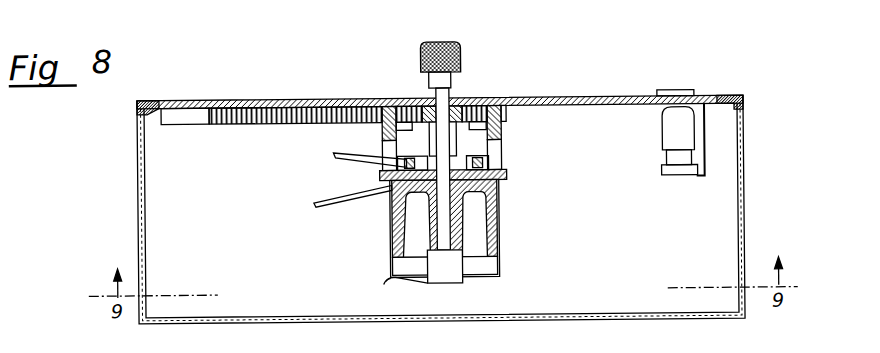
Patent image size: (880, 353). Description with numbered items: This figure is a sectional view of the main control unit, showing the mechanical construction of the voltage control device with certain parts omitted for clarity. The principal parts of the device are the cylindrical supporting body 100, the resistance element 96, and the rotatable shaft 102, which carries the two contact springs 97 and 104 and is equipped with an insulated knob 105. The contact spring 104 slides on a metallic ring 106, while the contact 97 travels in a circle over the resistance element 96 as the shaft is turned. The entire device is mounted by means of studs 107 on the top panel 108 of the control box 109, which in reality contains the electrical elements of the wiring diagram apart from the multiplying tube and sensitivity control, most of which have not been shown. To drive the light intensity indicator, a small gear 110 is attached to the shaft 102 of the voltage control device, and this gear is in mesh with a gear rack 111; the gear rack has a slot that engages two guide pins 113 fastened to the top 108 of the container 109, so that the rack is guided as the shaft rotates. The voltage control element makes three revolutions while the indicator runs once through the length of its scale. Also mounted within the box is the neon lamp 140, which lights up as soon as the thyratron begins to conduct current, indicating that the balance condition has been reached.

The resistance element 96 is at (500, 250).
The contact spring 97 is at (395, 283).
The cylindrical supporting body 100 is at (497, 198).
The rotatable shaft 102 is at (440, 218).
The contact spring 104 is at (404, 157).
The insulated knob 105 is at (452, 41).
The metallic ring 106 is at (484, 160).
The studs 107 is at (394, 95).
The top panel 108 is at (586, 97).
The control box 109 is at (744, 196).
The small gear 110 is at (458, 100).
The gear rack 111 is at (252, 123).
The guide pins 113 is at (396, 105).
The neon lamp 140 is at (672, 127).